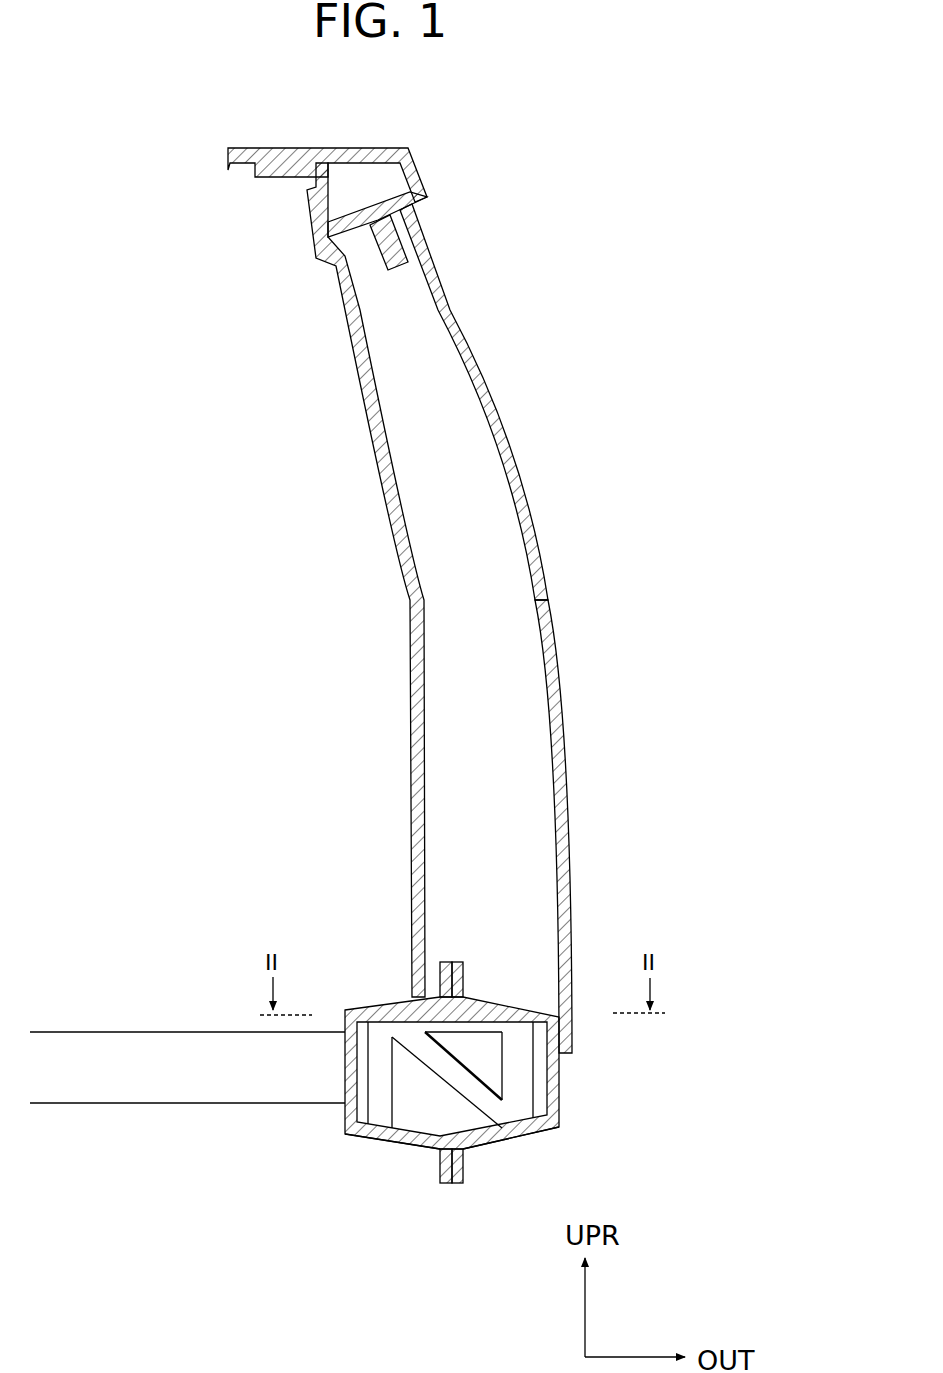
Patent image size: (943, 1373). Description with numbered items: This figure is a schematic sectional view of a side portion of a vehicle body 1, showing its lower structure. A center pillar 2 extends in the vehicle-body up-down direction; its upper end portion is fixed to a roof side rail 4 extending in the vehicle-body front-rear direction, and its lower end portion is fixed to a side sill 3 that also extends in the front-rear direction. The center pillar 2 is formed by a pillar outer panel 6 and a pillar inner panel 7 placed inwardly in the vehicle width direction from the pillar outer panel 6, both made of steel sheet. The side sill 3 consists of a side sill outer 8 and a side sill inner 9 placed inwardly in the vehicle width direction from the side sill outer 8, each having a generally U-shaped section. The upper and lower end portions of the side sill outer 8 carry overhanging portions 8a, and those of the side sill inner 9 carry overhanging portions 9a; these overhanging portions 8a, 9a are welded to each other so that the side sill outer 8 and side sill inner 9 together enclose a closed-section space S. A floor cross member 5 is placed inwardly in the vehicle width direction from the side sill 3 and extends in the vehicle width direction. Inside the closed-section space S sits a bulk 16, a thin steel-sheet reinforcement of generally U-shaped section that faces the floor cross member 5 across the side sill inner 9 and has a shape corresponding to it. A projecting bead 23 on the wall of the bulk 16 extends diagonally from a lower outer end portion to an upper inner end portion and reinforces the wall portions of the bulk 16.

The vehicle body 1 is at (524, 189).
The center pillar 2 is at (530, 491).
The side sill 3 is at (564, 1107).
The roof side rail 4 is at (318, 150).
The floor cross member 5 is at (85, 1068).
The pillar outer panel 6 is at (560, 685).
The pillar inner panel 7 is at (413, 737).
The side sill outer 8 is at (528, 1137).
The overhanging portion 8a is at (463, 975).
The side sill inner 9 is at (370, 1140).
The overhanging portion 9a is at (442, 963).
The bulk 16 is at (375, 1068).
The bead 23 is at (455, 1075).
The closed-section space S is at (420, 993).